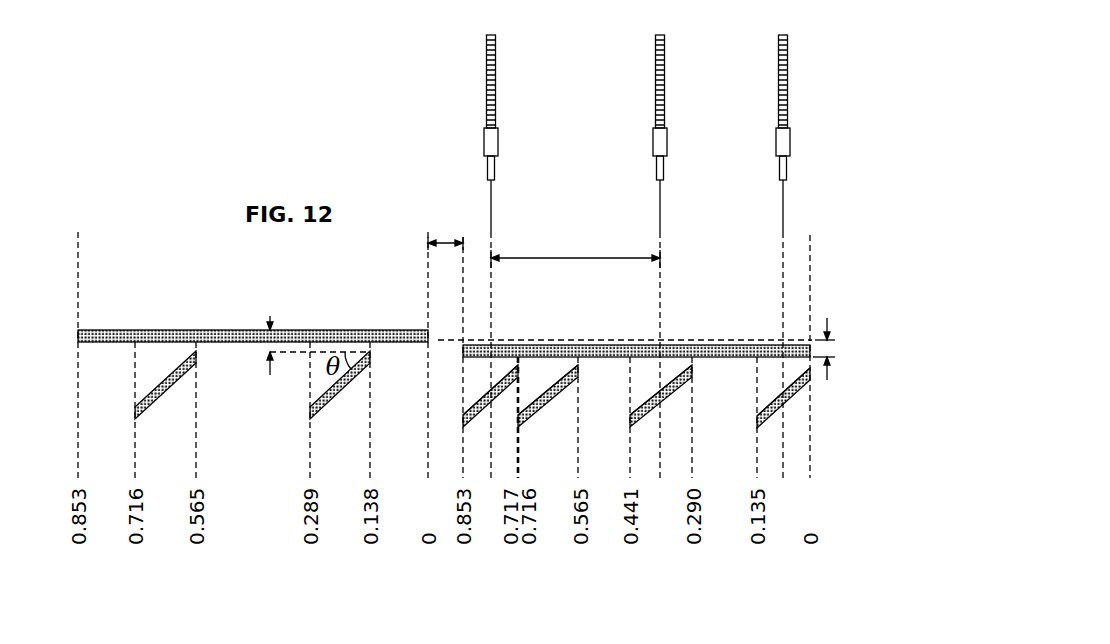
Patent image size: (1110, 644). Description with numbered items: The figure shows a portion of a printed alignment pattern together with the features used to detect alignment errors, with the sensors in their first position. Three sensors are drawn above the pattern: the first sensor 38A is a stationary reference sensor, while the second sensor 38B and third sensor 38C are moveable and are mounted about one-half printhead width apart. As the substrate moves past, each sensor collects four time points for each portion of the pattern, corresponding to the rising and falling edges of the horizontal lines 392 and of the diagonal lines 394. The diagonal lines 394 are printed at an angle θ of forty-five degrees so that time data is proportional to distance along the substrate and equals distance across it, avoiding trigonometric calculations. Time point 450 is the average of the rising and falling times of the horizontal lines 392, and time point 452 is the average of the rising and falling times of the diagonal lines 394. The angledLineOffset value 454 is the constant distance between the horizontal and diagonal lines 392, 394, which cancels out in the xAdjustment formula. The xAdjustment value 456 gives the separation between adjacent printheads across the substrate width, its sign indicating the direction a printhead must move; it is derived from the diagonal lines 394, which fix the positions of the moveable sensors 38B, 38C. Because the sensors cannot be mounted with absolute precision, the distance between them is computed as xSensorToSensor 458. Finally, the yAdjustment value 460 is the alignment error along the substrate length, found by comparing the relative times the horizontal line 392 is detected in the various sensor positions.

The first sensor 38A is at (778, 36).
The second sensor 38B is at (655, 36).
The third sensor 38C is at (486, 36).
The horizontal lines 392 is at (117, 330).
The diagonal lines 394 is at (152, 405).
The time point 450 is at (492, 338).
The time point 452 is at (473, 405).
The angledLineOffset value 454 is at (268, 318).
The xAdjustment value 456 is at (447, 242).
The xSensorToSensor 458 is at (577, 256).
The yAdjustment value 460 is at (828, 373).